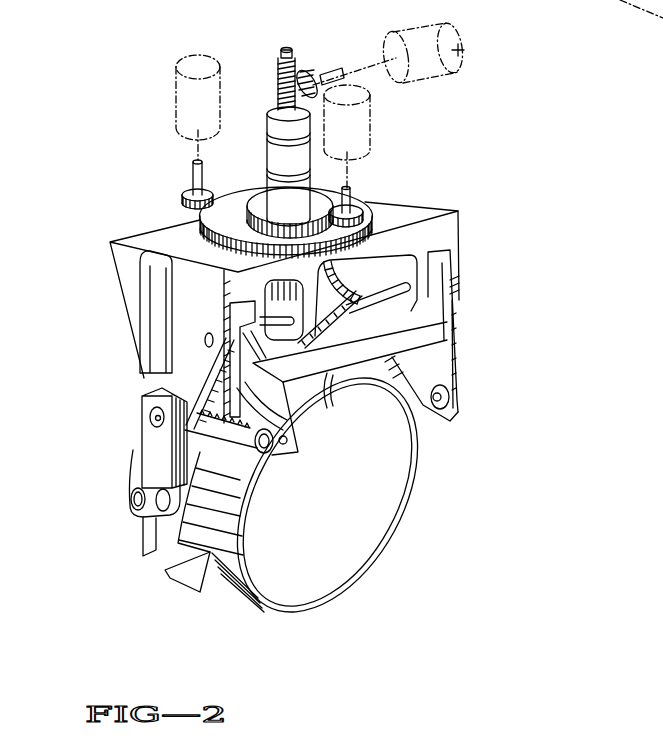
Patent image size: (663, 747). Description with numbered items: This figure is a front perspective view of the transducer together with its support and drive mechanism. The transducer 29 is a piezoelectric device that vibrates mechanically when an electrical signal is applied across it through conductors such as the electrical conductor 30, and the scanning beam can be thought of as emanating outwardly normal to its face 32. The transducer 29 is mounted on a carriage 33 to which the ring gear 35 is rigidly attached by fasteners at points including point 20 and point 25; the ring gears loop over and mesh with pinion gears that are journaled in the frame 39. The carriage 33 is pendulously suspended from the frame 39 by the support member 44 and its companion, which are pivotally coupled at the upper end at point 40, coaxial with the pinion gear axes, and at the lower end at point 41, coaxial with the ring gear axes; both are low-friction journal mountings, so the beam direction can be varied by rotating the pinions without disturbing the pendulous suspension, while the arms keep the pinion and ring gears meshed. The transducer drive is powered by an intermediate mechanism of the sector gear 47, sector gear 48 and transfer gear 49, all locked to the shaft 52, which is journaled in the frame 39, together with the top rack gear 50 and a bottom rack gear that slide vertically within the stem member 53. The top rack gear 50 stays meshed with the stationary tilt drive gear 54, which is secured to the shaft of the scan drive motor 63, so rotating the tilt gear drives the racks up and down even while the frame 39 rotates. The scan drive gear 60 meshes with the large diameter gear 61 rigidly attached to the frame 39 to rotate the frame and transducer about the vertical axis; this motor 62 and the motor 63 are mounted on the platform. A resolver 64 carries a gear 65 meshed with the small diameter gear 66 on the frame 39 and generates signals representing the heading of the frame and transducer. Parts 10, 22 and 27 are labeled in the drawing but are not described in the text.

The lever arm 10 is at (131, 523).
The attachment point 20 is at (283, 458).
The housing 22 is at (143, 381).
The attachment point 25 is at (457, 402).
The line 27 is at (607, 0).
The transducer 29 is at (390, 535).
The electrical conductor 30 is at (333, 410).
The face 32 is at (388, 490).
The carriage 33 is at (432, 368).
The ring gear 35 is at (250, 416).
The frame 39 is at (454, 192).
The axis of rotation / mounting point 40 is at (152, 423).
The mounting point 41 is at (150, 562).
The support member 44 is at (168, 464).
The sector gear 47 is at (283, 367).
The sector gear 48 is at (443, 326).
The transfer gear 49 is at (360, 274).
The top rack gear 50 is at (297, 62).
The shaft 52 is at (376, 300).
The stem member 53 is at (312, 171).
The tilt drive gear 54 is at (318, 72).
The scan drive gear 60 is at (182, 200).
The large diameter gear 61 is at (235, 203).
The motor 62 is at (218, 88).
The scan drive motor 63 is at (463, 50).
The resolver 64 is at (366, 120).
The gear 65 is at (364, 212).
The small diameter gear 66 is at (247, 217).